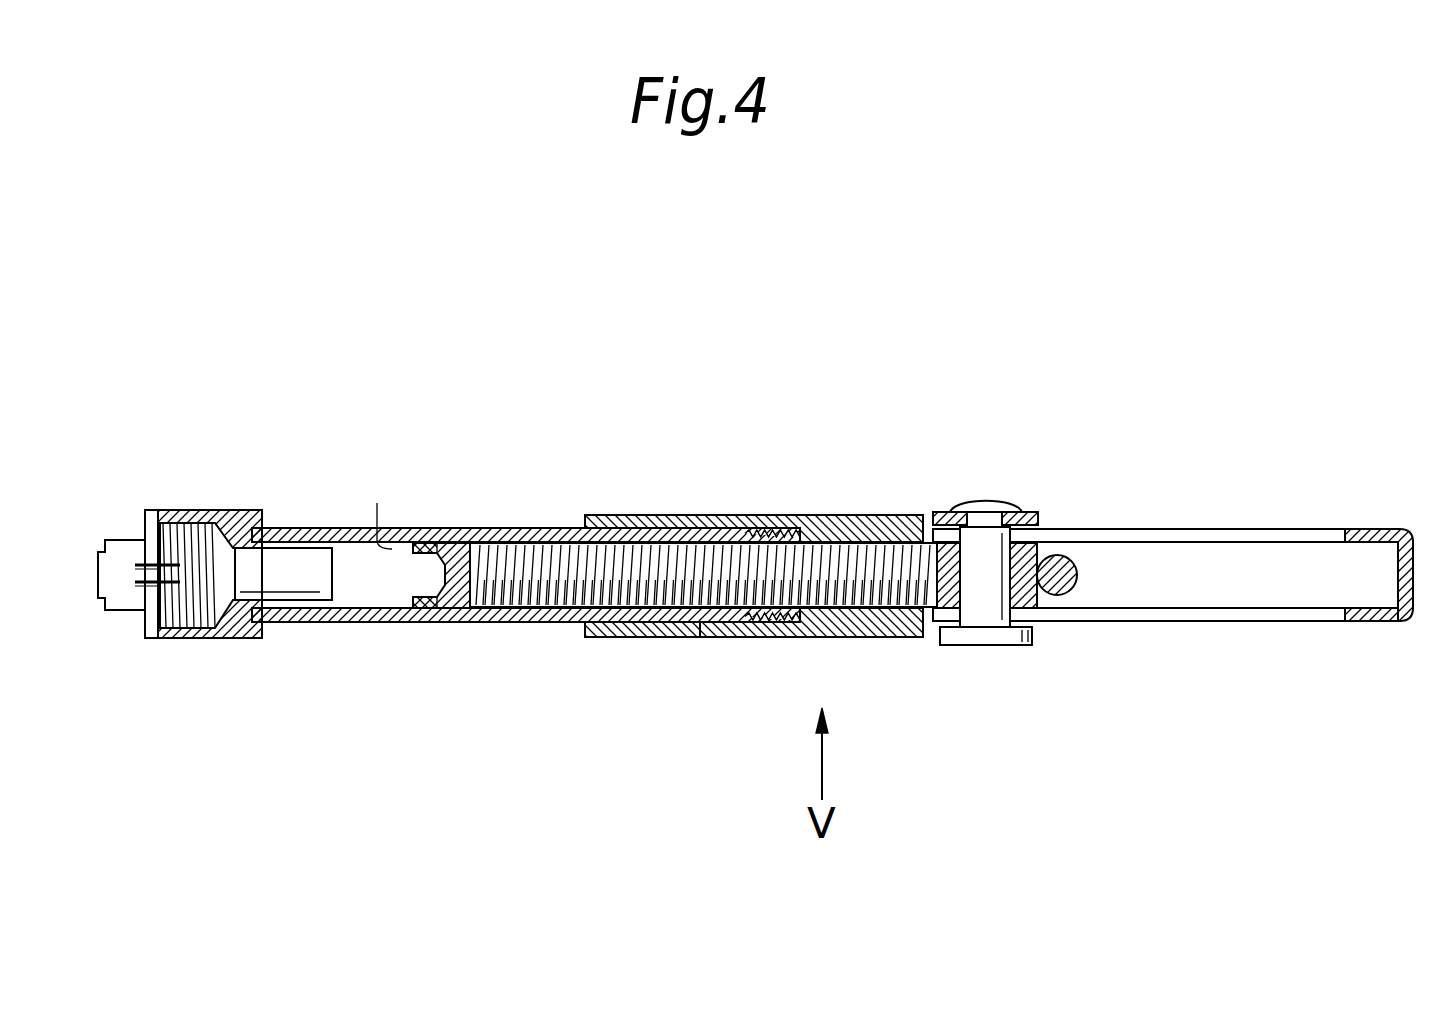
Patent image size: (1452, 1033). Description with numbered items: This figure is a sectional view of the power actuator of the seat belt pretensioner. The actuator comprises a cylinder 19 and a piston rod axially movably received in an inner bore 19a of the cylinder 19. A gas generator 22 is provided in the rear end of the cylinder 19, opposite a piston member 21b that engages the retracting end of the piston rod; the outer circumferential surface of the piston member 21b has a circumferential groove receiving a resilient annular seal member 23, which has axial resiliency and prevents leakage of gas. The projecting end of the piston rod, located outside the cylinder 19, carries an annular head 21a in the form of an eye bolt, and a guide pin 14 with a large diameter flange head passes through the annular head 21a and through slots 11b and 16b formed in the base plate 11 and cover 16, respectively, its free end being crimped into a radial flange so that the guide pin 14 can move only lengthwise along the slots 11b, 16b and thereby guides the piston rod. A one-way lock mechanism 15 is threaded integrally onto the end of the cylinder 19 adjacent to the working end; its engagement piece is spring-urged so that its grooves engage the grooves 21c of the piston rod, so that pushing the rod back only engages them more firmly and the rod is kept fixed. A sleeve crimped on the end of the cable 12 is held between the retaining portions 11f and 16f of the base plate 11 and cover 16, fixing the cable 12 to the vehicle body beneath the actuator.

The base plate 11 is at (1376, 530).
The slot 11b is at (1328, 531).
The retaining portion 11f is at (608, 514).
The cable 12 is at (1080, 593).
The guide pin 14 is at (982, 646).
The one-way lock mechanism 15 is at (813, 514).
The cover 16 is at (1382, 622).
The slot 16b is at (1328, 623).
The retaining portion 16f is at (648, 638).
The cylinder 19 is at (317, 624).
The inner bore 19a is at (420, 495).
The annular head 21a is at (1053, 535).
The piston member 21b is at (452, 543).
The grooves 21c is at (528, 611).
The gas generator 22 is at (296, 548).
The seal member 23 is at (437, 612).